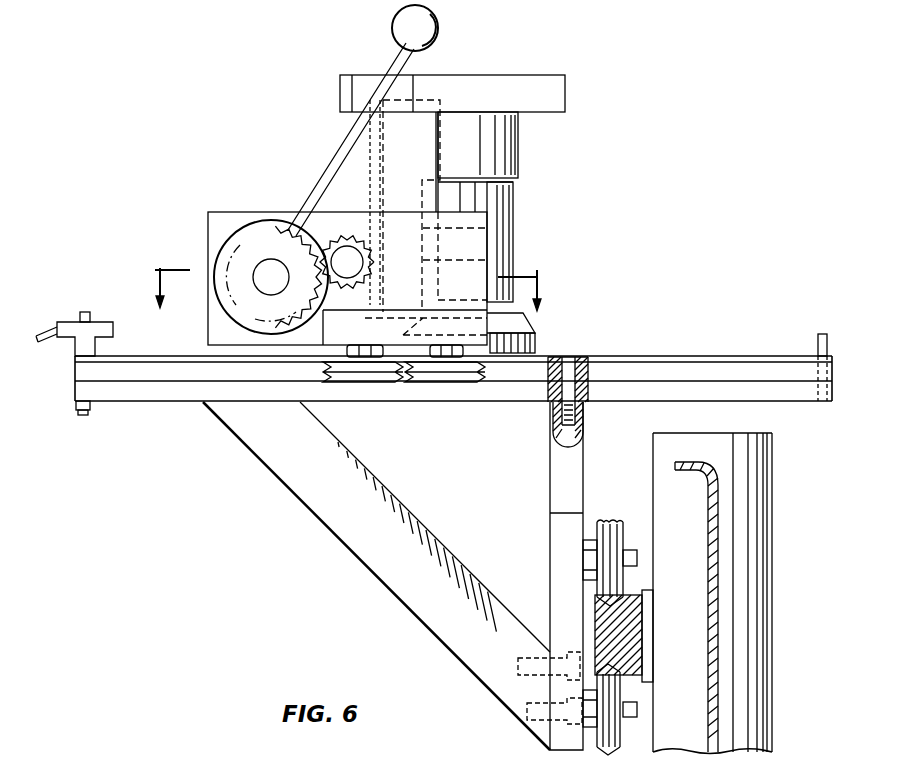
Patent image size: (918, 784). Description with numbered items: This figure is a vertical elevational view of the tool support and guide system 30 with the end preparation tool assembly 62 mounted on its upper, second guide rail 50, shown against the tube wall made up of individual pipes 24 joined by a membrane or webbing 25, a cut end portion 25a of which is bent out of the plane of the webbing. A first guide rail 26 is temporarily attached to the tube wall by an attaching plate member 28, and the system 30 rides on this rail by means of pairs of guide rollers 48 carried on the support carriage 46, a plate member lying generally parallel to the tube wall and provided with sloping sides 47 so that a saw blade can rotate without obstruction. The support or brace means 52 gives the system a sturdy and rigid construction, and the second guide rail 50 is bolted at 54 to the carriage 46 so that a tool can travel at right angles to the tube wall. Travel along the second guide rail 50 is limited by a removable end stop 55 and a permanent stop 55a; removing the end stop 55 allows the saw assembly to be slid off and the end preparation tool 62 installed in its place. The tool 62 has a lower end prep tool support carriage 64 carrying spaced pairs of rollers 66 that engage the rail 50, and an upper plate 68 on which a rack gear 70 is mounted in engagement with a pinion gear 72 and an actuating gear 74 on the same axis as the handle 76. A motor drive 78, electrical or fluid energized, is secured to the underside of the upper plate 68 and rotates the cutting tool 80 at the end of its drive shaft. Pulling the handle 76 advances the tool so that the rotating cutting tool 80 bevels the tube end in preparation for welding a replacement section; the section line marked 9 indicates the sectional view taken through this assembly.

The pipe 24 is at (760, 660).
The membrane or webbing 25 is at (712, 624).
The end portion of membrane 25a is at (695, 462).
The first guide rail 26 is at (628, 612).
The attaching plate member 28 is at (645, 656).
The tool support and guide system 30 is at (384, 589).
The support carriage 46 is at (553, 560).
The sloping sides 47 is at (556, 473).
The guide rollers 48 is at (612, 522).
The second guide rail 50 is at (705, 362).
The support or brace means 52 is at (425, 620).
The bolt 54 is at (568, 362).
The removable end stop 55 is at (80, 322).
The permanent stop 55a is at (820, 340).
The end preparation tool assembly 62 is at (505, 69).
The lower end prep tool support carriage 64 is at (470, 328).
The rollers 66 is at (432, 385).
The upper plate 68 is at (560, 95).
The rack gear 70 is at (382, 150).
The pinion gear 72 is at (362, 230).
The actuating gear 74 is at (282, 240).
The handle 76 is at (341, 151).
The motor drive 78 is at (510, 161).
The cutting tool 80 is at (535, 343).
The section line 9 is at (361, 289).